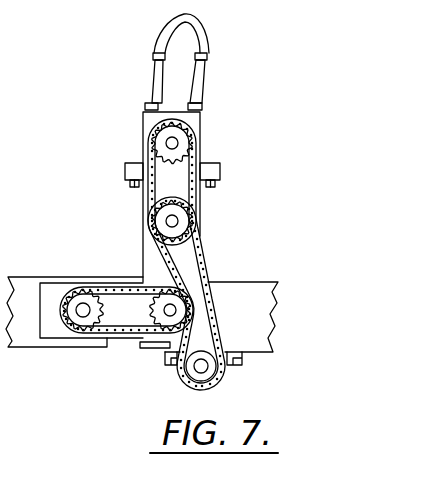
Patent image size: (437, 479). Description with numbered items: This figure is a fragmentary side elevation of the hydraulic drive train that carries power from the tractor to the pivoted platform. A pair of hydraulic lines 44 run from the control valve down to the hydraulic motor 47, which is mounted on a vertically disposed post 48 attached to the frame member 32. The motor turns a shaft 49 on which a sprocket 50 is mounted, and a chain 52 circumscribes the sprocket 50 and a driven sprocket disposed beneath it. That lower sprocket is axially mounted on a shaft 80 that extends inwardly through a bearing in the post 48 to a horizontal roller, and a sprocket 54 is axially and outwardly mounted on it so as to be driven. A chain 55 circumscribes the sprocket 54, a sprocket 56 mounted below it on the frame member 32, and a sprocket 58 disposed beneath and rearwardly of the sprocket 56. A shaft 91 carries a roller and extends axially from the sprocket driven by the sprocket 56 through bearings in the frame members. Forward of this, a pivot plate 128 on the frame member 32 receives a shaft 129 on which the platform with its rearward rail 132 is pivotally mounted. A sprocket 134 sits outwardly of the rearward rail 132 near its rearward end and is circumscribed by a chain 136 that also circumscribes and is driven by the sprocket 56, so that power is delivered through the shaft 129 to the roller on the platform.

The frame member 32 is at (258, 293).
The hydraulic lines 44 is at (177, 60).
The hydraulic motor 47 is at (143, 120).
The vertically disposed post 48 is at (143, 247).
The shaft 49 is at (178, 147).
The sprocket 50 is at (186, 131).
The chain 52 is at (150, 143).
The sprocket 54 is at (188, 217).
The chain 55 is at (207, 259).
The sprocket 56 is at (160, 343).
The sprocket 58 is at (212, 368).
The shaft 80 is at (166, 218).
The shaft 91 is at (190, 299).
The pivot plates 128 is at (128, 320).
The shaft 129 is at (82, 308).
The rearward rail 132 is at (30, 347).
The sprocket 134 is at (85, 322).
The chain 136 is at (108, 287).